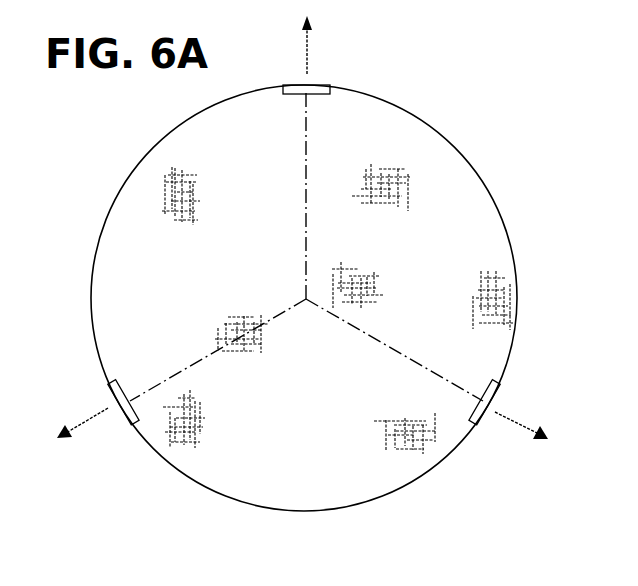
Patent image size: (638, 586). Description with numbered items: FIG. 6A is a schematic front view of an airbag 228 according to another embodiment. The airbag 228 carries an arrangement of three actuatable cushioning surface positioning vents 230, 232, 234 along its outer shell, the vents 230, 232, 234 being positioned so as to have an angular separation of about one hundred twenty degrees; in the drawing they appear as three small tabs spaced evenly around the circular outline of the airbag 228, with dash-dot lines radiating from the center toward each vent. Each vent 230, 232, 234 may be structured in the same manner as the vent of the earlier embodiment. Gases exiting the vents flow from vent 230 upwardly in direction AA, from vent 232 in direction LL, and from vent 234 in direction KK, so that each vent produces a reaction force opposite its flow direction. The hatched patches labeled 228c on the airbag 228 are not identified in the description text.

The airbag 228 is at (465, 187).
The damaged regions of substrate 228c is at (235, 166).
The actuatable cushioning surface positioning vent 230 is at (322, 83).
The actuatable cushioning surface positioning vent 232 is at (125, 417).
The actuatable cushioning surface positioning vent 234 is at (493, 391).